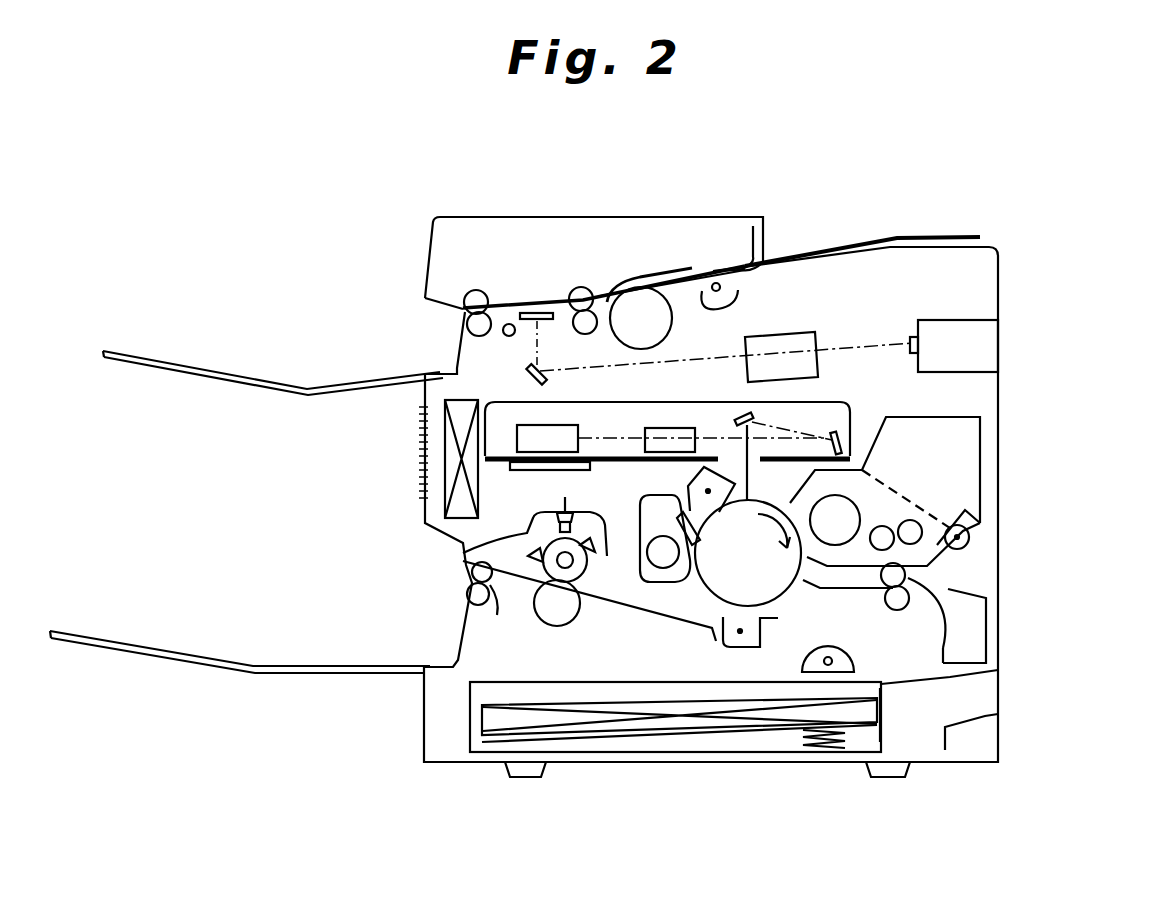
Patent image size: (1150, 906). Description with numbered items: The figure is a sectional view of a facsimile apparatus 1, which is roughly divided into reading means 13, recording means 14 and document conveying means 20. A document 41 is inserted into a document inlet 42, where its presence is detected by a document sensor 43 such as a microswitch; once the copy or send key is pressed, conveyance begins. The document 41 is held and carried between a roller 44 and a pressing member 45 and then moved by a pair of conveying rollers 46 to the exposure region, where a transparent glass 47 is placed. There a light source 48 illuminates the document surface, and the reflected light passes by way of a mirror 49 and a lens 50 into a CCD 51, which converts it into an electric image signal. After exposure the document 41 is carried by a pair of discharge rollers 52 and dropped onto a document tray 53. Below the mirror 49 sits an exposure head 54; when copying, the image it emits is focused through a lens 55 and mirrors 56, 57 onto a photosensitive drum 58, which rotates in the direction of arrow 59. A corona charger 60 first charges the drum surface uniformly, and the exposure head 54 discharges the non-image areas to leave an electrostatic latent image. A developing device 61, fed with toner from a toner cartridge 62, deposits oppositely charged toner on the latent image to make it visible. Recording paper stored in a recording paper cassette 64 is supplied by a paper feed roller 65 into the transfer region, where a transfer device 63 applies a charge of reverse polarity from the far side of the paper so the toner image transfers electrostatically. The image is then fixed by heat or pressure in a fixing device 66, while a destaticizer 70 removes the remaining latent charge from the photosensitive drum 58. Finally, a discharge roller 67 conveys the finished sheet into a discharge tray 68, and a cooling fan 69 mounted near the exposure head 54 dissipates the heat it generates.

The facsimile apparatus 1 is at (312, 803).
The reading means 13 is at (1072, 255).
The recording means 14 is at (1072, 425).
The document conveying means 20 is at (770, 173).
The document 41 is at (885, 236).
The document inlet 42 is at (748, 265).
The document sensor 43 is at (726, 300).
The roller 44 is at (664, 328).
The pressing member 45 is at (623, 284).
The conveying rollers 46 is at (577, 291).
The transparent glass 47 is at (546, 320).
The light source 48 is at (507, 337).
The mirror 49 is at (530, 382).
The lens 50 is at (805, 334).
The CCD 51 is at (912, 338).
The discharge rollers 52 is at (485, 315).
The document tray 53 is at (153, 364).
The exposure head 54 is at (536, 471).
The lens 55 is at (655, 428).
The mirror 56 is at (848, 432).
The mirror 57 is at (739, 414).
The photosensitive drum 58 is at (725, 578).
The arrow 59 is at (748, 553).
The corona charger 60 is at (693, 480).
The developing device 61 is at (965, 494).
The toner cartridge 62 is at (958, 470).
The transfer device 63 is at (722, 641).
The recording paper cassette 64 is at (708, 736).
The paper feed roller 65 is at (900, 608).
The fixing device 66 is at (463, 553).
The discharge roller 67 is at (488, 600).
The discharge tray 68 is at (137, 662).
The cooling fan 69 is at (428, 455).
The destaticizer 70 is at (648, 535).